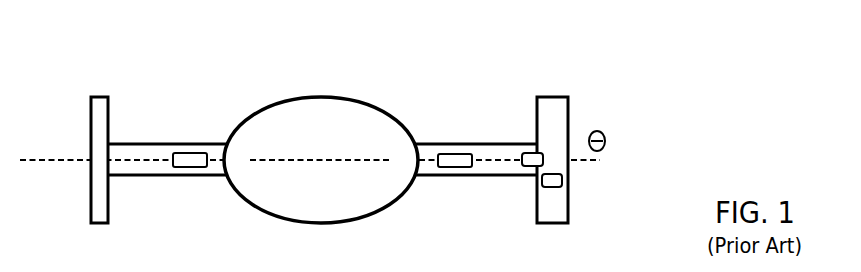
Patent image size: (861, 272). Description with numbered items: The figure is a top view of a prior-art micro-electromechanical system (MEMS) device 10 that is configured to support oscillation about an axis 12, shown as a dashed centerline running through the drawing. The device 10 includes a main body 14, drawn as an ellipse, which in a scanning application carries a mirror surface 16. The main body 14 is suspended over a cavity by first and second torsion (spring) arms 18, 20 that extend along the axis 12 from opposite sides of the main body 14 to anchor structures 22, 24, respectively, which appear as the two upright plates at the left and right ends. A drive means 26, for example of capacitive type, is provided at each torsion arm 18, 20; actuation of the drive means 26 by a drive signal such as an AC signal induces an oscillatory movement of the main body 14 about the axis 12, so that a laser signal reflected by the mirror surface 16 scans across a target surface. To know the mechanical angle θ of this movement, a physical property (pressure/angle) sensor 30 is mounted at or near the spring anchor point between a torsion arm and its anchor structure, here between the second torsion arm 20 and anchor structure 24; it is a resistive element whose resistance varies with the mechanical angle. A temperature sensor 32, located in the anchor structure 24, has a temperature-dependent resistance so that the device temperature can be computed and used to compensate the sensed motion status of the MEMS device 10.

The MEMS device 10 is at (263, 67).
The axis 12 is at (47, 160).
The main body 14 is at (248, 120).
The mirror surface 16 is at (260, 170).
The first torsion arm 18 is at (170, 143).
The second torsion arm 20 is at (470, 178).
The anchor structure 22 is at (100, 97).
The anchor structure 24 is at (547, 97).
The drive means 26 is at (455, 153).
The physical property sensor 30 is at (532, 165).
The temperature sensor 32 is at (562, 180).